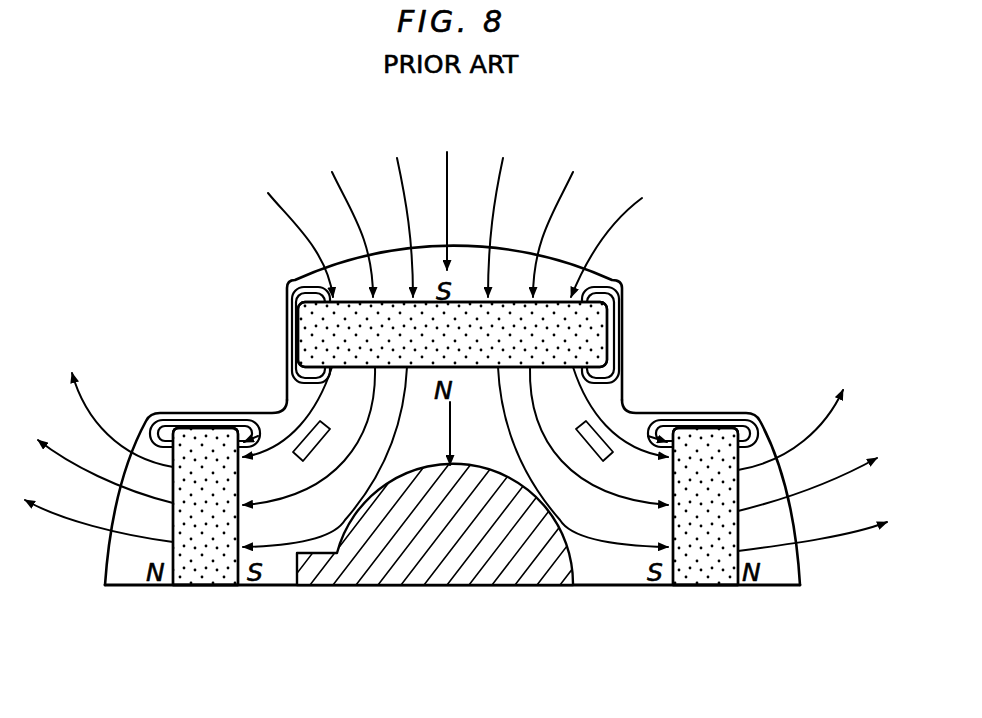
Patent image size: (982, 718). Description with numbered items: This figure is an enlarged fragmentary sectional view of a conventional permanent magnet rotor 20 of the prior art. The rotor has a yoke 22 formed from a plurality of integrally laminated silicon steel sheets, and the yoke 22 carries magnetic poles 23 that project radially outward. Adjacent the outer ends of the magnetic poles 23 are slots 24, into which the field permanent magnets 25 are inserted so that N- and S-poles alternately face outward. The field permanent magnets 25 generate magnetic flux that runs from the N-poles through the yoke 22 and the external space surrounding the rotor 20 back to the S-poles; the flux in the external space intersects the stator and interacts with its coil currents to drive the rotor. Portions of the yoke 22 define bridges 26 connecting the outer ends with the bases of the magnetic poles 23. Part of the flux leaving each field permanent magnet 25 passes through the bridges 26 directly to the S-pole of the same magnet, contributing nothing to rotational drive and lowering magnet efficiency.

The permanent magnet rotor 20 is at (737, 273).
The yoke 22 is at (628, 428).
The magnetic poles 23 is at (503, 262).
The slots 24 is at (292, 279).
The field permanent magnets 25 is at (594, 328).
The bridges 26 is at (288, 323).